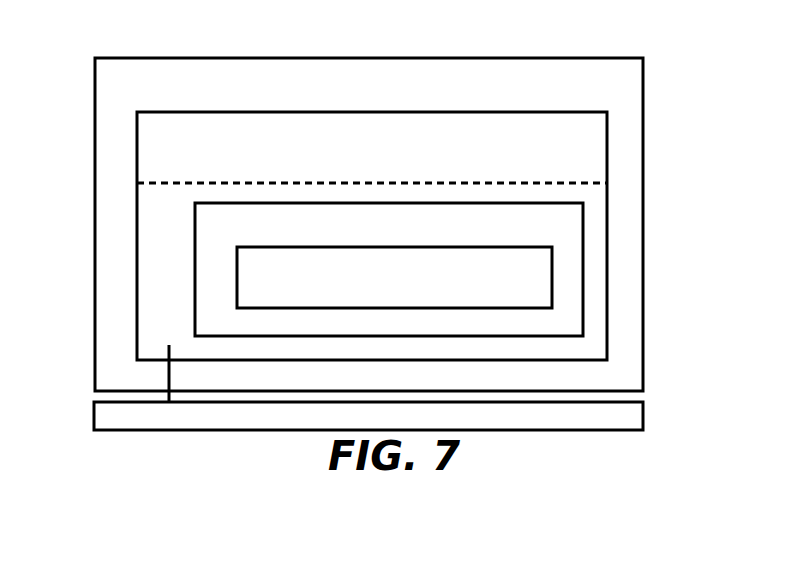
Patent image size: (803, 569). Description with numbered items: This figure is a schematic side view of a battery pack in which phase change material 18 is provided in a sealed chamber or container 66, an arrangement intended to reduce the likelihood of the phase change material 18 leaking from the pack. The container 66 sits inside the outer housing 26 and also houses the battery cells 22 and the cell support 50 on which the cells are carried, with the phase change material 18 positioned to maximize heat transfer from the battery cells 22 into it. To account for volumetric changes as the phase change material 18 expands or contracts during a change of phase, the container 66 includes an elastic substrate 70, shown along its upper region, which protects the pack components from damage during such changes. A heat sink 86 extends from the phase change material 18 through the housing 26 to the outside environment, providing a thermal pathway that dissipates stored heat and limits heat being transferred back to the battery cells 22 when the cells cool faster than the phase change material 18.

The housing 26 is at (111, 57).
The container 66 is at (610, 175).
The elastic substrate 70 is at (586, 140).
The cell support 50 is at (586, 250).
The battery cells 22 is at (553, 275).
The phase change material 18 is at (157, 277).
The heat sink 86 is at (645, 413).